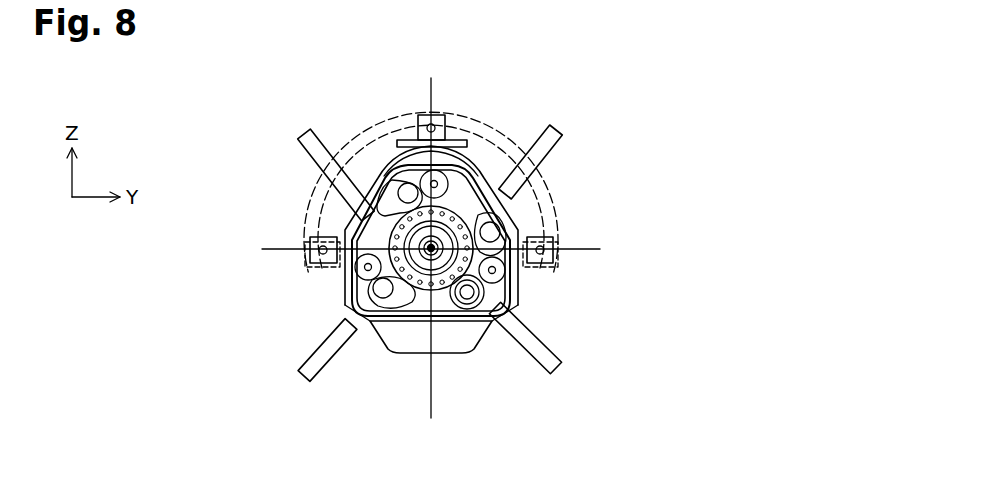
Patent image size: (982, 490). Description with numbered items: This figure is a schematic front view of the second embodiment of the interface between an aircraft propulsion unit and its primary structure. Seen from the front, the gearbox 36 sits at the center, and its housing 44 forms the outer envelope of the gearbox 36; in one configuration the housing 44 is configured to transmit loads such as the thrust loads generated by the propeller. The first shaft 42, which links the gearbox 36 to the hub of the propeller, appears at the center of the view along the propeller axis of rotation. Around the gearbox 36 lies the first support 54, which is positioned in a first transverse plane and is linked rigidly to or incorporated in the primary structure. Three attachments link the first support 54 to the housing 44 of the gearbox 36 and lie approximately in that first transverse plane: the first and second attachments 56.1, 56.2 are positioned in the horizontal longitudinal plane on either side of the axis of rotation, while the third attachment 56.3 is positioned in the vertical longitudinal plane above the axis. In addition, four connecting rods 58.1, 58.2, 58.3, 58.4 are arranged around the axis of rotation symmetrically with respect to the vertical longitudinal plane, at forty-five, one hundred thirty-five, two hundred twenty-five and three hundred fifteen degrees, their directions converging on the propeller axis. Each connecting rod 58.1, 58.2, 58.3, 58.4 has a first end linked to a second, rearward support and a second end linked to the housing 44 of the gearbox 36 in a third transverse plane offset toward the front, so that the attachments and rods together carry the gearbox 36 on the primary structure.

The gearbox 36 is at (360, 219).
The first shaft 42 is at (422, 259).
The housing 44 is at (505, 210).
The first support 54 is at (318, 188).
The first attachment 56.1 is at (298, 263).
The second attachment 56.2 is at (564, 264).
The third attachment 56.3 is at (450, 114).
The connecting rod 58.1 is at (296, 133).
The connecting rod 58.2 is at (556, 146).
The connecting rod 58.3 is at (555, 345).
The connecting rod 58.4 is at (310, 356).